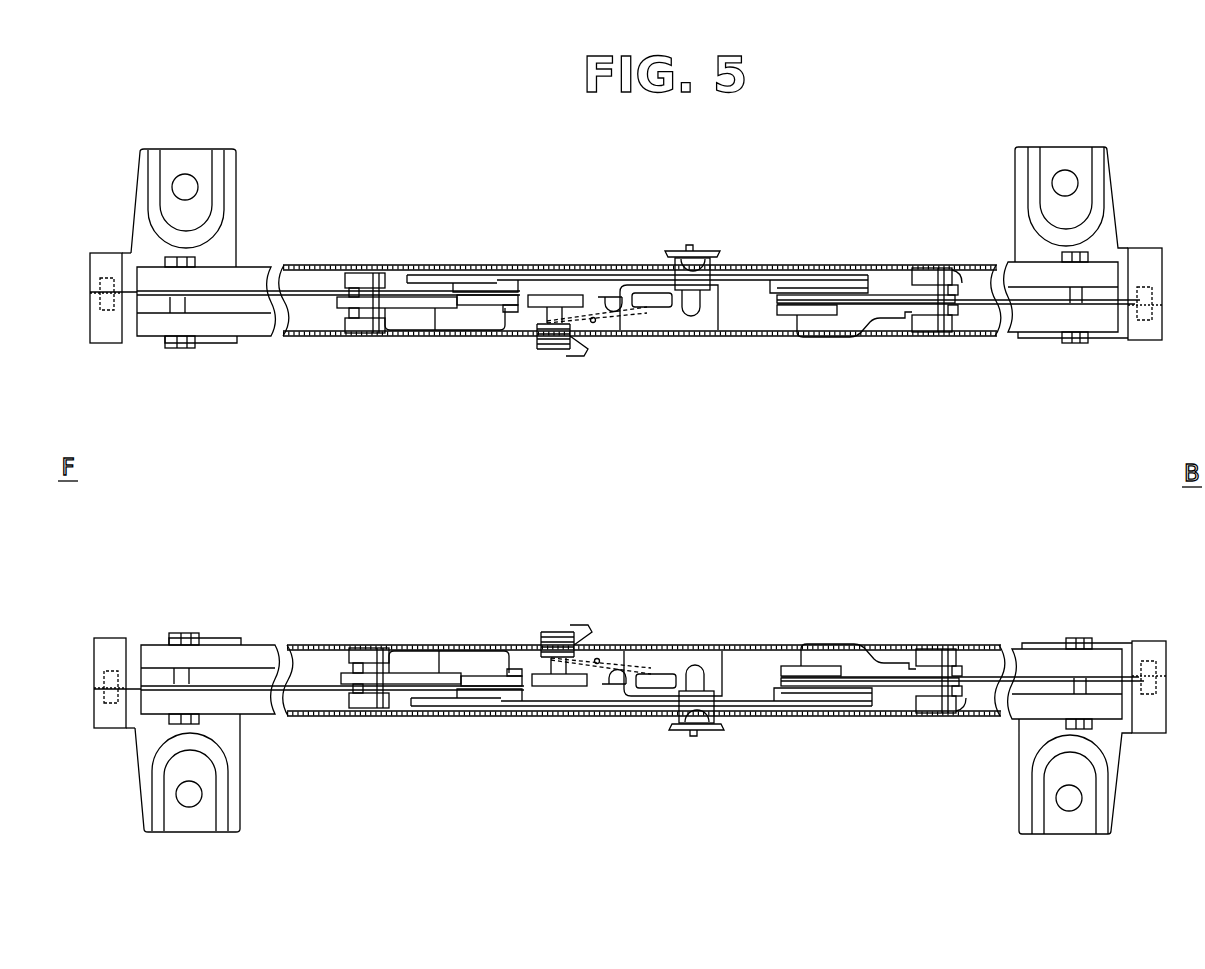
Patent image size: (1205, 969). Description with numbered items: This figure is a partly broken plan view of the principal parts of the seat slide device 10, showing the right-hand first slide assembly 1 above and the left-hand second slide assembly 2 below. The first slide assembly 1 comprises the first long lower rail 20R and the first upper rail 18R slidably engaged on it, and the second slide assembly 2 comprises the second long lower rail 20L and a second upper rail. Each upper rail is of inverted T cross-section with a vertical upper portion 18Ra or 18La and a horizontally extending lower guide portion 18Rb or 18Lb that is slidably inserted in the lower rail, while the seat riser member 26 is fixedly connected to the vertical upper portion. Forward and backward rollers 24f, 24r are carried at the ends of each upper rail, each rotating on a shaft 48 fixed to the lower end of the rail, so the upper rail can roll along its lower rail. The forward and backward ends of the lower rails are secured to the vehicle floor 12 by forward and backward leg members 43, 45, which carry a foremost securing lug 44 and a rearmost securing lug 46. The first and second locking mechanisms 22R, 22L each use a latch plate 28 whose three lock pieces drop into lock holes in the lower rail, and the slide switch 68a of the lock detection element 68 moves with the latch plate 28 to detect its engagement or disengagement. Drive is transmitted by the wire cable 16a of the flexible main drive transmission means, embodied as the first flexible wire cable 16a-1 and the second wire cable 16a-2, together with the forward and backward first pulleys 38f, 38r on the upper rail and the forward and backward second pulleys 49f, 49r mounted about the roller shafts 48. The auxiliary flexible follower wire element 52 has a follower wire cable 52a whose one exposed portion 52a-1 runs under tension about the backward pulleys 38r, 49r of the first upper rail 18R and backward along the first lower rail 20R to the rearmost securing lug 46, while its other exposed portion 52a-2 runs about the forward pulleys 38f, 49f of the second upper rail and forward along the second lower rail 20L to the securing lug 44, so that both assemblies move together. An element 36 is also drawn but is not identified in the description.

The first slide assembly 1 is at (496, 150).
The second slide assembly 2 is at (494, 822).
The seat slide device 10 is at (900, 120).
The vehicle floor 12 is at (147, 494).
The wire cable 16a is at (1040, 672).
The first flexible wire cable 16a-1 is at (242, 285).
The second wire cable 16a-2 is at (1120, 648).
The first upper rail 18R is at (890, 294).
The vertical upper portion 18Ra is at (428, 330).
The lower guide portion 18Rb is at (632, 285).
The vertical upper portion 18La is at (893, 692).
The lower guide portion 18Lb is at (645, 700).
The first long lower rail 20R is at (296, 262).
The second long lower rail 20L is at (307, 723).
The first locking mechanism 22R is at (632, 338).
The second locking mechanism 22L is at (632, 645).
The forward roller 24f is at (362, 272).
The backward roller 24r is at (930, 268).
The seat riser member 26 is at (706, 249).
The latch plate 28 is at (612, 298).
The coil spring 36 is at (555, 352).
The forward first pulley 38f is at (495, 284).
The backward first pulley 38r is at (790, 280).
The forward leg member 43 is at (145, 226).
The foremost securing lug 44 is at (104, 345).
The backward leg member 45 is at (1110, 220).
The rearmost securing lug 46 is at (1147, 342).
The shaft 48 is at (955, 285).
The forward second pulley 49f is at (382, 298).
The backward second pulley 49r is at (920, 333).
The auxiliary flexible follower wire element 52 is at (1035, 310).
The follower wire cable 52a is at (252, 694).
The exposed portion of follower wire cable 52a-1 is at (1118, 340).
The another exposed portion of follower wire cable 52a-2 is at (445, 660).
The lock detection element 68 is at (714, 286).
The slide switch 68a is at (691, 316).